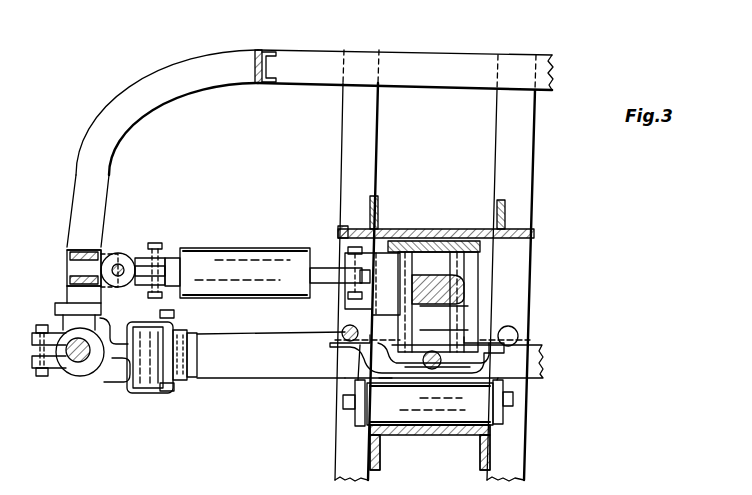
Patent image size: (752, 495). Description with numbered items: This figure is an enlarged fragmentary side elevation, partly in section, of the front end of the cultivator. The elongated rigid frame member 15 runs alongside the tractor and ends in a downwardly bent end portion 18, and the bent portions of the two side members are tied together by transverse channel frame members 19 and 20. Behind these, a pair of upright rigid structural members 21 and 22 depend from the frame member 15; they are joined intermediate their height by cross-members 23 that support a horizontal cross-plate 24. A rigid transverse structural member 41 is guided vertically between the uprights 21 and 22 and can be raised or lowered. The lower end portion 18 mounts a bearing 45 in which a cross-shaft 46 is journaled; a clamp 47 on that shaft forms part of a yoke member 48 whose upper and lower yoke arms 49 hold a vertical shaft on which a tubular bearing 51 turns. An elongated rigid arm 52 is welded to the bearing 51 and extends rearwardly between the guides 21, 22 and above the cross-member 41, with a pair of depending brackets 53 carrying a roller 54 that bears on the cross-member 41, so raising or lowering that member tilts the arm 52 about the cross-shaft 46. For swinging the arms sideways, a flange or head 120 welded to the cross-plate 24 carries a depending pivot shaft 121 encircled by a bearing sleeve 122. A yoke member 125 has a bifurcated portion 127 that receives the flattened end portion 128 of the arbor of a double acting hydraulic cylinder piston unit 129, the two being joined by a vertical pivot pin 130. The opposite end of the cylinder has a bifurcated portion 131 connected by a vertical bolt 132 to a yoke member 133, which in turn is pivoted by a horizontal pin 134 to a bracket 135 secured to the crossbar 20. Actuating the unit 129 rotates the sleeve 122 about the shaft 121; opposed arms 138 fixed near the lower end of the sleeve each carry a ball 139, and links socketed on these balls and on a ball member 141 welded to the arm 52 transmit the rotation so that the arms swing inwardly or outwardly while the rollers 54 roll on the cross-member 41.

The elongated rigid frame member 15 is at (448, 70).
The downwardly bent end portion 18 is at (94, 150).
The transverse frame member 19 is at (264, 84).
The transverse frame member 20 is at (66, 257).
The upright rigid structural member 21 is at (344, 148).
The upright rigid structural member 22 is at (521, 148).
The cross-member 23 is at (378, 204).
The cross-plate 24 is at (465, 229).
The transverse structural member 41 is at (453, 435).
The bearing 45 is at (58, 311).
The cross-shaft 46 is at (79, 365).
The clamp 47 is at (62, 372).
The yoke member 48 is at (115, 384).
The yoke arm 49 is at (174, 318).
The tubular bearing 51 is at (150, 383).
The elongated rigid arm 52 is at (260, 366).
The bracket 53 is at (356, 419).
The roller 54 is at (408, 425).
The flange or head 120 is at (428, 242).
The pivot shaft 121 is at (460, 299).
The bearing sleeve 122 is at (462, 318).
The yoke member 125 is at (354, 319).
The bifurcated portion 127 is at (346, 254).
The flattened end portion 128 is at (336, 268).
The hydraulic cylinder piston unit 129 is at (232, 268).
The pivot pin or bolt 130 is at (345, 228).
The bifurcated portion 131 is at (176, 256).
The bolt or pin 132 is at (156, 244).
The yoke member 133 is at (141, 260).
The bolt or pin 134 is at (118, 262).
The bracket or support 135 is at (96, 246).
The arm 138 is at (350, 354).
The ball 139 is at (338, 338).
The ball member 141 is at (444, 362).